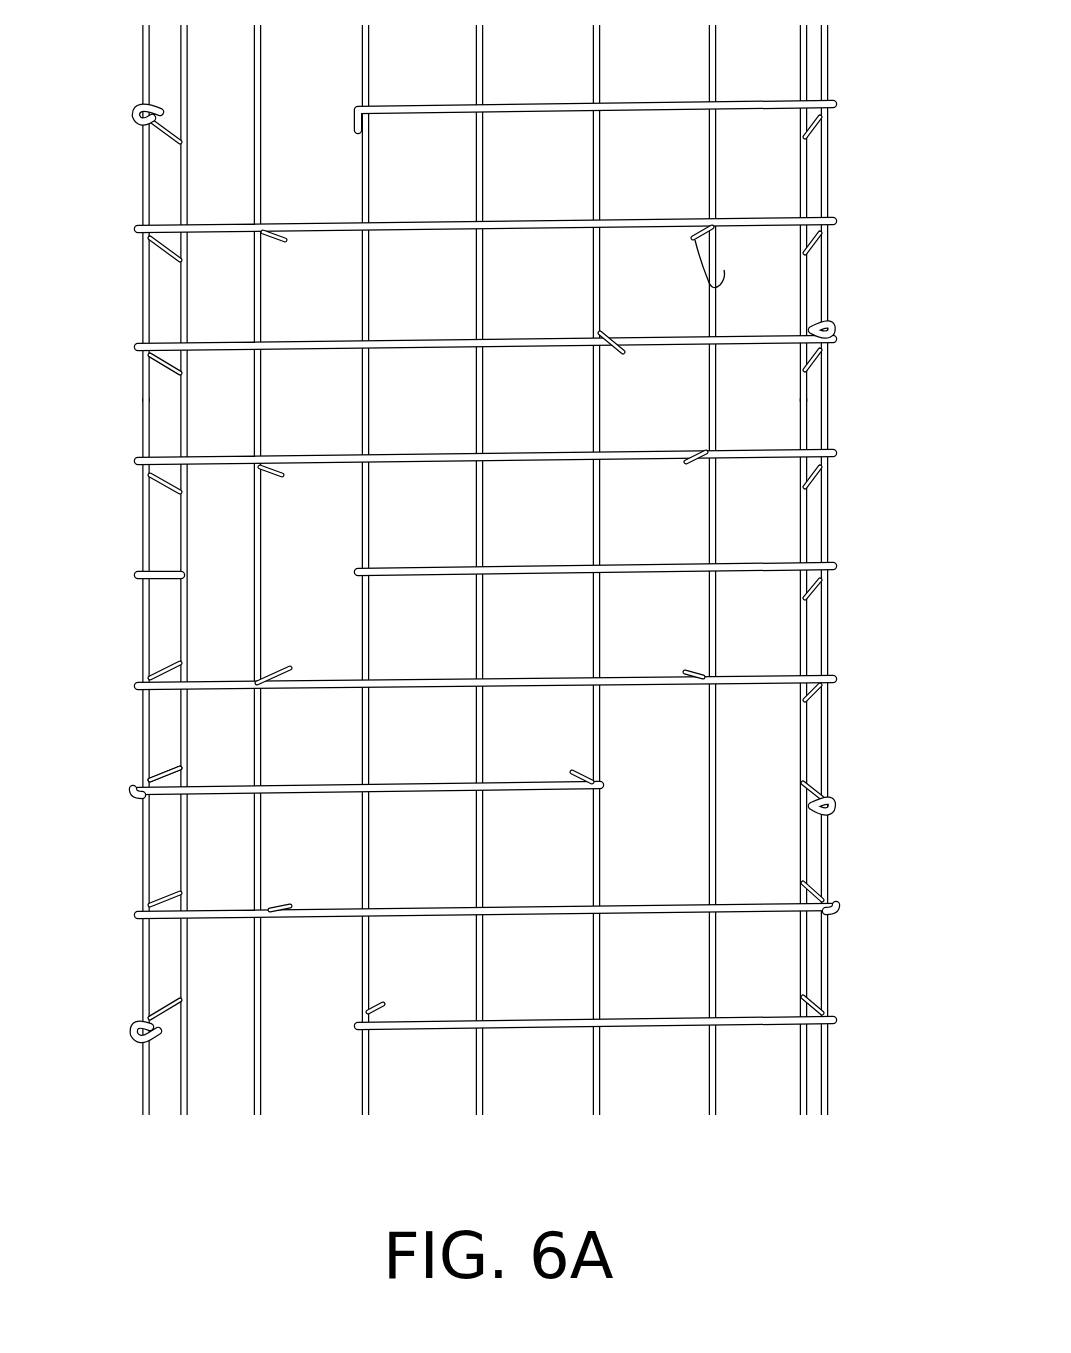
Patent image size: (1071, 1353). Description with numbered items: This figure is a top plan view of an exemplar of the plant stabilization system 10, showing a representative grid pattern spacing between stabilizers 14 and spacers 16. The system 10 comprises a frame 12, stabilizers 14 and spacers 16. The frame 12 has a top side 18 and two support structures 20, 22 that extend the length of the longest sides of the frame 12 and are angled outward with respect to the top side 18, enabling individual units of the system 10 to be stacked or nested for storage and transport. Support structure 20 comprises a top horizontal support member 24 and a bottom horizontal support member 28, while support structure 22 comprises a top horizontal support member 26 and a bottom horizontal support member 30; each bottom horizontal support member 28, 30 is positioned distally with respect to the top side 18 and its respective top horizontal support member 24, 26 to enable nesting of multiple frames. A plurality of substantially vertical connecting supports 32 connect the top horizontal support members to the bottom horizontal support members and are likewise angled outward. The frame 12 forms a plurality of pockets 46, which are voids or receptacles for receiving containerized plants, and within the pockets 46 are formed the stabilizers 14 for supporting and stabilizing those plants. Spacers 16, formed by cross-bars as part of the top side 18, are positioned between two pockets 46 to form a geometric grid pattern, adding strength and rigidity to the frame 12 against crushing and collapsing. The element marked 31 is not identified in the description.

The plant stabilization system 10 is at (489, 570).
The frame 12 is at (142, 765).
The stabilizers 14 is at (283, 236).
The spacers 16 is at (712, 106).
The top side 18 is at (408, 215).
The support structure 20 is at (833, 155).
The support structure 22 is at (140, 308).
The top horizontal support member 24 is at (833, 290).
The top horizontal support member 26 is at (143, 425).
The bottom horizontal support member 28 is at (805, 505).
The bottom horizontal support member 30 is at (180, 550).
The left hooks 31 is at (148, 1002).
The substantially vertical connecting supports 32 is at (818, 985).
The pockets 46 is at (322, 228).